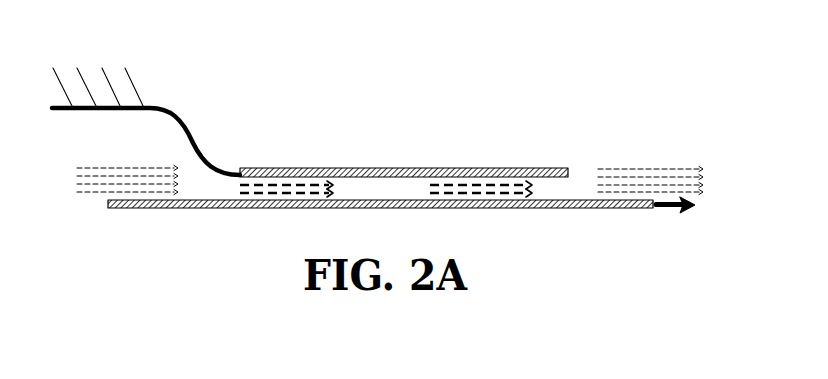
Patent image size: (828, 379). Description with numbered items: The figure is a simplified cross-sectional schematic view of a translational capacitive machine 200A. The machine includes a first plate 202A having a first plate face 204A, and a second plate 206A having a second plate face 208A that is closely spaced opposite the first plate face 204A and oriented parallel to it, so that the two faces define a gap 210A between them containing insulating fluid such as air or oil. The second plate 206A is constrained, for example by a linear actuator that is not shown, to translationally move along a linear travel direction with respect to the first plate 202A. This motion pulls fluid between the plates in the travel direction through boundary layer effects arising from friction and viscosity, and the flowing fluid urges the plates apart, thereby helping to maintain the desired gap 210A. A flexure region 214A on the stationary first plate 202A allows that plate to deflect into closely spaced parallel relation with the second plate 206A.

The translational capacitive machine 200A is at (383, 114).
The first plate 202A is at (328, 168).
The first plate face 204A is at (363, 187).
The second plate 206A is at (258, 208).
The second plate face 208A is at (366, 191).
The gap 210A is at (545, 190).
The flexure region 214A is at (192, 132).